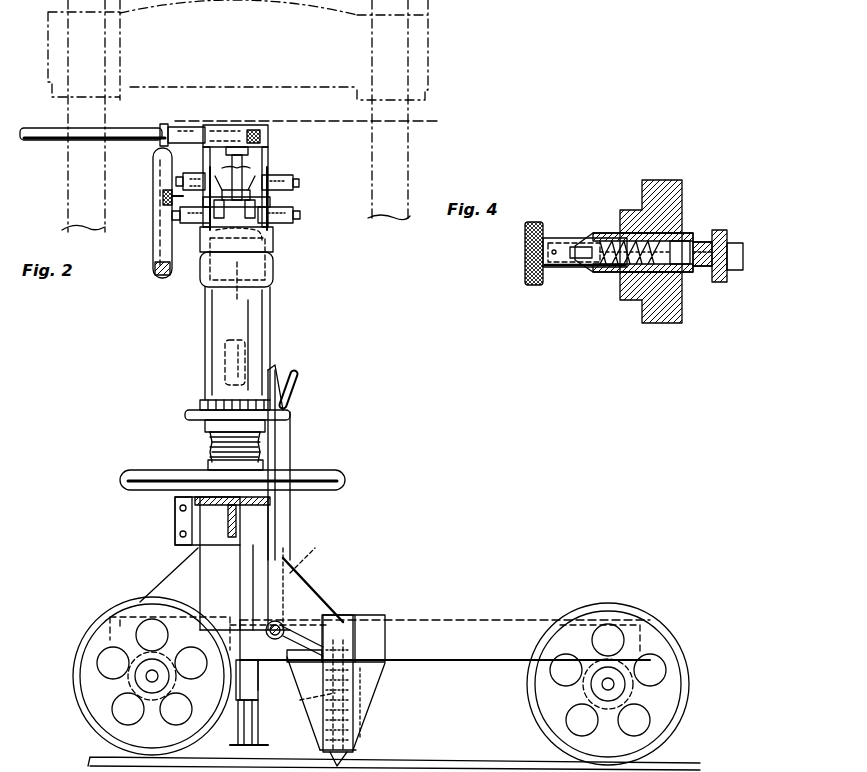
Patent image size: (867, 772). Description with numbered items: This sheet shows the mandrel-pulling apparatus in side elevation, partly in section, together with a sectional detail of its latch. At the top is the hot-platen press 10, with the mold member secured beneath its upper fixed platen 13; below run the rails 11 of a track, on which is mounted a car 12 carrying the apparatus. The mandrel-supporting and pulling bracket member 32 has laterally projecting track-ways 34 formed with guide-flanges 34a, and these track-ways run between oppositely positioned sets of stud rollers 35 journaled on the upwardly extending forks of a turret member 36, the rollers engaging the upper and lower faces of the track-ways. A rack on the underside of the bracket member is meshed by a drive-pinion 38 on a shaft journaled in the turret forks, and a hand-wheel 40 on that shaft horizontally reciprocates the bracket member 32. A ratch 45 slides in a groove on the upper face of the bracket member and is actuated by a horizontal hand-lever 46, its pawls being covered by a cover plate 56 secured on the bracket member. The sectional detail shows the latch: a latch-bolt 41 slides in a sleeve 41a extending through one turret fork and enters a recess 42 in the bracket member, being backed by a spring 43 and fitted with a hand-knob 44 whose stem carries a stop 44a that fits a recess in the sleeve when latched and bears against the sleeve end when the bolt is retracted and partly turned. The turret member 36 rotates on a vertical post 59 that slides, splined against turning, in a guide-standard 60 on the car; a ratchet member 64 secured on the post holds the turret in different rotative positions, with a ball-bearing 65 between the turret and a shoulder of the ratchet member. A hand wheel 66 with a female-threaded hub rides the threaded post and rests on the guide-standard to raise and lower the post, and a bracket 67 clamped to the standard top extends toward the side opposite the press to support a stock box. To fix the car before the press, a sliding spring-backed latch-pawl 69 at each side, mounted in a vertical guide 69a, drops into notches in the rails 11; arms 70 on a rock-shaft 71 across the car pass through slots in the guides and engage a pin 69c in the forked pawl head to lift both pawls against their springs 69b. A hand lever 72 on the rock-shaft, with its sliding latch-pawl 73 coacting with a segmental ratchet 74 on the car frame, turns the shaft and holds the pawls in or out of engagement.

In FIG. 2, the hot-platen press 10 is at (350, 44).
In FIG. 2, the rails 11 is at (448, 760).
In FIG. 2, the car 12 is at (470, 640).
In FIG. 2, the upper fixed platen 13 is at (320, 123).
In FIG. 2, the bracket member 32 is at (242, 172).
In FIG. 2, the track-ways 34 is at (272, 195).
In FIG. 4, the track-ways 34 is at (745, 235).
In FIG. 2, the guide-flanges 34a is at (232, 182).
In FIG. 2, the stud rollers 35 is at (198, 174).
In FIG. 2, the turret member 36 is at (258, 276).
In FIG. 2, the drive-pinion 38 is at (275, 258).
In FIG. 2, the hand-wheel 40 is at (157, 180).
In FIG. 4, the latch-bolt 41 is at (705, 240).
In FIG. 4, the sleeve 41a is at (598, 232).
In FIG. 4, the recess 42 is at (706, 270).
In FIG. 4, the spring 43 is at (608, 232).
In FIG. 2, the hand-knob 44 is at (165, 205).
In FIG. 4, the hand-knob 44 is at (532, 288).
In FIG. 4, the stop 44a is at (582, 268).
In FIG. 2, the ratch 45 is at (248, 145).
In FIG. 2, the hand-lever 46 is at (131, 142).
In FIG. 2, the cover plate 56 is at (222, 130).
In FIG. 2, the vertical post 59 is at (240, 735).
In FIG. 2, the guide-standard 60 is at (205, 565).
In FIG. 2, the ratchet member 64 is at (185, 416).
In FIG. 2, the ball-bearing 65 is at (200, 404).
In FIG. 2, the hand wheel 66 is at (345, 480).
In FIG. 2, the bracket 67 is at (230, 510).
In FIG. 2, the latch-pawl 69 is at (350, 755).
In FIG. 2, the vertical guides 69a is at (330, 700).
In FIG. 2, the springs 69b is at (356, 690).
In FIG. 2, the pin 69c is at (345, 660).
In FIG. 2, the arms 70 is at (330, 640).
In FIG. 2, the rock-shaft 71 is at (280, 622).
In FIG. 2, the hand lever 72 is at (292, 445).
In FIG. 2, the latch-pawl 73 is at (308, 583).
In FIG. 2, the segmental ratchet 74 is at (300, 590).